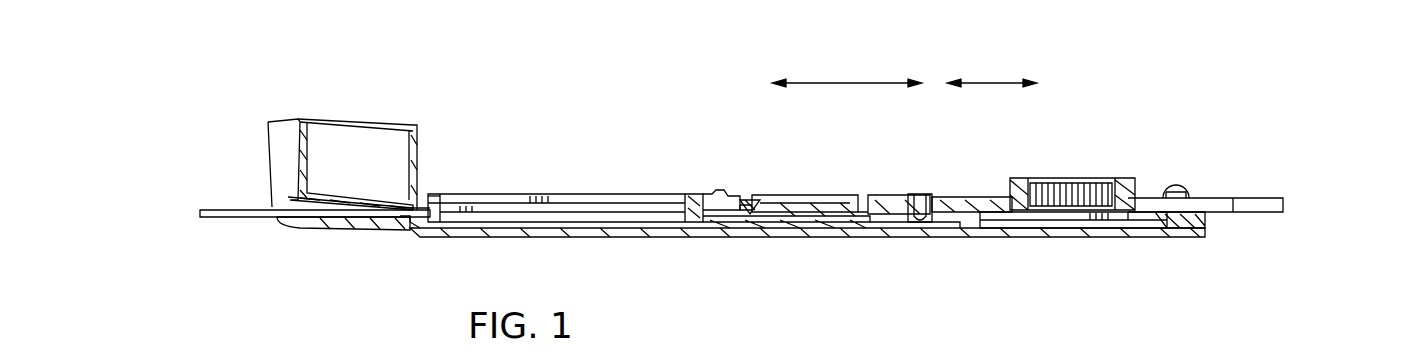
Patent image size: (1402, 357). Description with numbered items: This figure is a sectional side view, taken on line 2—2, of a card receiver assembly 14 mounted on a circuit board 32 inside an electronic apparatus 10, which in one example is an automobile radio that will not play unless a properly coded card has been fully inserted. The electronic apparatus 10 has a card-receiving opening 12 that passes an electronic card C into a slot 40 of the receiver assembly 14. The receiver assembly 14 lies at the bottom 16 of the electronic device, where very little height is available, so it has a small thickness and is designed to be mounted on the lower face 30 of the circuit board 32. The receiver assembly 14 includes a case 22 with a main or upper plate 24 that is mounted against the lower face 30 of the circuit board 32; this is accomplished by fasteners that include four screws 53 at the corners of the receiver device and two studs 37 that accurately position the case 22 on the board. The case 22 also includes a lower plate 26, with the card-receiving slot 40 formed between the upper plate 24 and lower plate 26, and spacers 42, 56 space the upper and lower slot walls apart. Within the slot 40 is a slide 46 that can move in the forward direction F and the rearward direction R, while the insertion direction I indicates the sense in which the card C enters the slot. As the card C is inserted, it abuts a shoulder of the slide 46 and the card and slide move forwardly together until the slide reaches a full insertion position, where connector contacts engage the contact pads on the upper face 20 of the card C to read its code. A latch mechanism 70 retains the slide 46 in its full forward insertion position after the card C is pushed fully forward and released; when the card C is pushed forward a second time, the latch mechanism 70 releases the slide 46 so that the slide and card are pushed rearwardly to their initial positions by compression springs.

The line 2— 2 is at (150, 150).
The rearward direction R is at (818, 83).
The forward direction F is at (877, 83).
The insertion direction I is at (997, 83).
The electronic card C is at (222, 209).
The electronic apparatus 10 is at (307, 150).
The card-receiving opening 12 is at (298, 217).
The card receiver assembly 14 is at (590, 190).
The bottom 16 is at (505, 232).
The upper face 20 is at (262, 208).
The case 22 is at (1206, 223).
The upper plate 24 is at (696, 195).
The lower plate 26 is at (878, 238).
The lower face 30 is at (1232, 213).
The circuit board 32 is at (1147, 190).
The stud 37 is at (717, 196).
The slot 40 is at (1058, 226).
The spacer 42 is at (1186, 228).
The slide 46 is at (745, 238).
The screw 53 is at (1193, 194).
The spacer 56 is at (440, 200).
The latch mechanism 70 is at (980, 210).